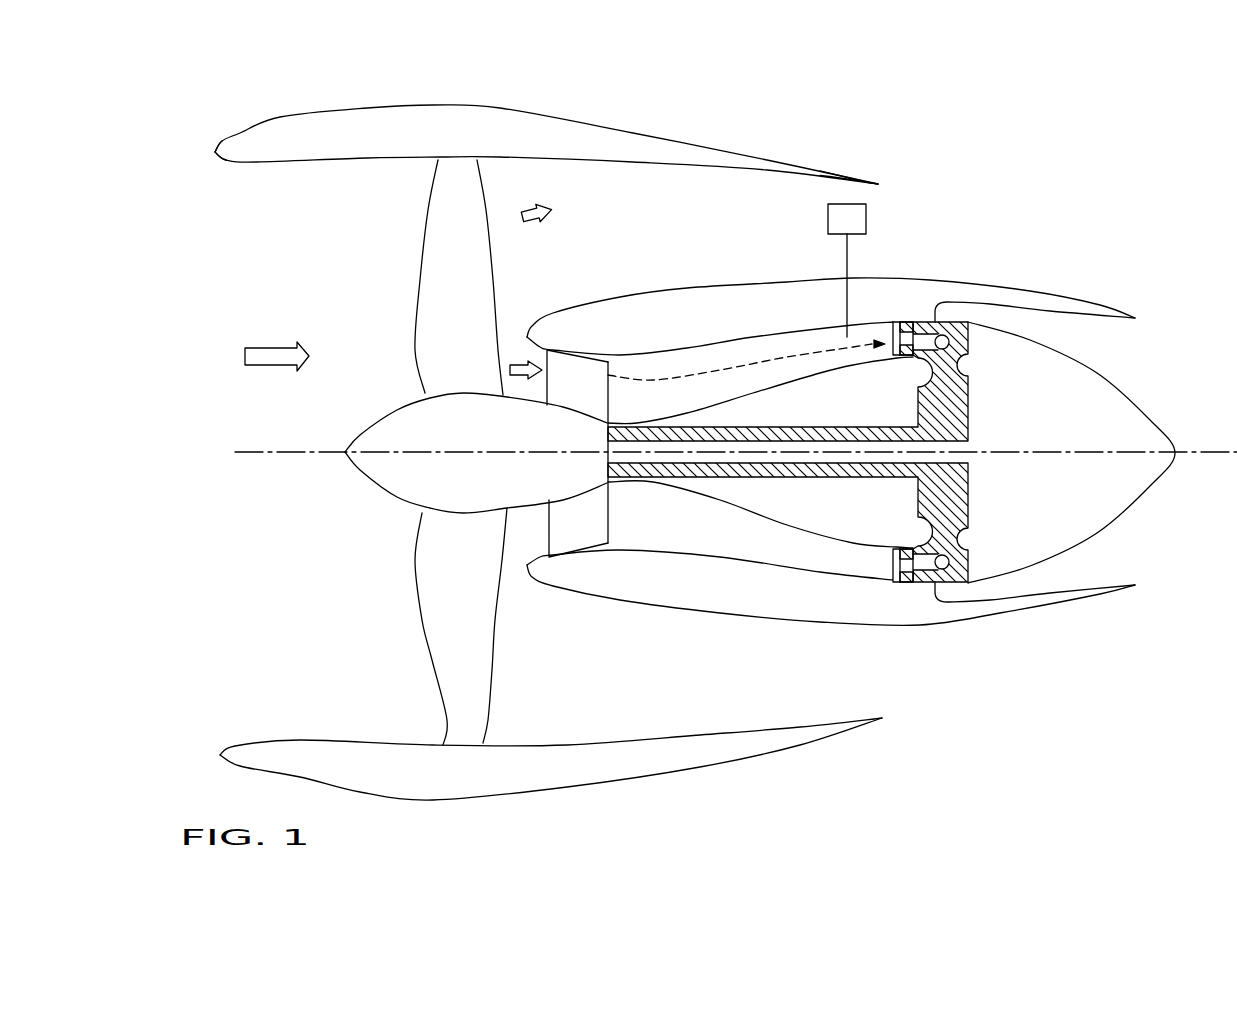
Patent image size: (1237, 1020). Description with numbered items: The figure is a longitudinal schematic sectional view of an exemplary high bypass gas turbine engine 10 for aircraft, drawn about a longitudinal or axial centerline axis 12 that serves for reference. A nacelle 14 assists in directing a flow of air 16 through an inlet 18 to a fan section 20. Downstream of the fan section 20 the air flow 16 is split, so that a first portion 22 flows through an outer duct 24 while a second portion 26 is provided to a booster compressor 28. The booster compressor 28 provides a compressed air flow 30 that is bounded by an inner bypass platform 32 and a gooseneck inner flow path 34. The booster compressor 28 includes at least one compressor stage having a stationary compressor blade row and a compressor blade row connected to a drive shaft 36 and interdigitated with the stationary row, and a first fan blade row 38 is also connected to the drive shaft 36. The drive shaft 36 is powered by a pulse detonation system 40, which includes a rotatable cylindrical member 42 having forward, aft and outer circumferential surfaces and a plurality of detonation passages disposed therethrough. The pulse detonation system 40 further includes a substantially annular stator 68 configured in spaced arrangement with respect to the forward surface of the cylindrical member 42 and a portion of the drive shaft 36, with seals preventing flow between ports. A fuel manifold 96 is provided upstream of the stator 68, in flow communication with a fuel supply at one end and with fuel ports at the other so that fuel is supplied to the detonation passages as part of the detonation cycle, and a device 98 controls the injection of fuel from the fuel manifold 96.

The gas turbine engine 10 is at (1152, 108).
The longitudinal or axial centerline axis 12 is at (308, 453).
The nacelle 14 is at (282, 135).
The flow of air 16 is at (262, 345).
The inlet 18 is at (262, 167).
The fan section 20 is at (423, 662).
The first portion of air flow 22 is at (533, 222).
The outer duct 24 is at (660, 168).
The second portion of air flow 26 is at (520, 362).
The booster compressor 28 is at (547, 534).
The compressed air flow 30 is at (758, 360).
The inner bypass platform 32 is at (677, 307).
The gooseneck inner flow path 34 is at (727, 400).
The drive shaft 36 is at (740, 480).
The first fan blade row 38 is at (482, 673).
The pulse detonation system 40 is at (971, 307).
The rotatable cylindrical member 42 is at (986, 562).
The stator 68 is at (902, 371).
The fuel manifold 96 is at (847, 253).
The device 98 is at (828, 213).